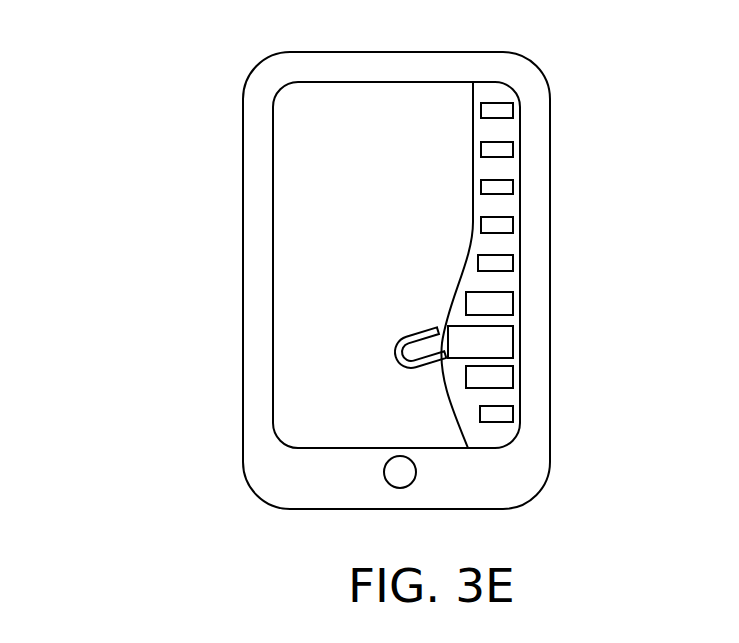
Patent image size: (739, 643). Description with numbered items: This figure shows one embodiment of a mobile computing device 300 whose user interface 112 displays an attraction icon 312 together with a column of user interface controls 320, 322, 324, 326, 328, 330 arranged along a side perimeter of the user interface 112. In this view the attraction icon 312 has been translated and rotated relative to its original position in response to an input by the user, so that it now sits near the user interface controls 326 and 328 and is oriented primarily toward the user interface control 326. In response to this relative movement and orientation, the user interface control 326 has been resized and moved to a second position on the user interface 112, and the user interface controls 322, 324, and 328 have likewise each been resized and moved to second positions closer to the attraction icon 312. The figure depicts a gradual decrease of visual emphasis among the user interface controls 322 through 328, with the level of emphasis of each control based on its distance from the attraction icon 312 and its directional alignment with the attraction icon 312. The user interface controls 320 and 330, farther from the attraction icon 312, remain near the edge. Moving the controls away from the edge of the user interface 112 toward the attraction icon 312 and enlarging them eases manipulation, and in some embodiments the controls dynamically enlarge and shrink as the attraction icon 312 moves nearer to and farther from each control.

The mobile computing device 300 is at (243, 252).
The user interface 112 is at (313, 268).
The attraction icon 312 is at (393, 357).
The user interface control 320 is at (513, 225).
The user interface control 322 is at (513, 263).
The user interface control 324 is at (513, 303).
The user interface control 326 is at (513, 342).
The user interface control 328 is at (513, 377).
The user interface control 330 is at (513, 414).